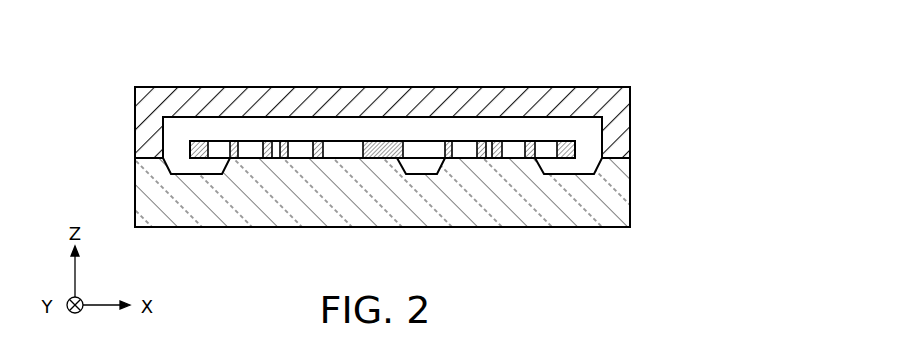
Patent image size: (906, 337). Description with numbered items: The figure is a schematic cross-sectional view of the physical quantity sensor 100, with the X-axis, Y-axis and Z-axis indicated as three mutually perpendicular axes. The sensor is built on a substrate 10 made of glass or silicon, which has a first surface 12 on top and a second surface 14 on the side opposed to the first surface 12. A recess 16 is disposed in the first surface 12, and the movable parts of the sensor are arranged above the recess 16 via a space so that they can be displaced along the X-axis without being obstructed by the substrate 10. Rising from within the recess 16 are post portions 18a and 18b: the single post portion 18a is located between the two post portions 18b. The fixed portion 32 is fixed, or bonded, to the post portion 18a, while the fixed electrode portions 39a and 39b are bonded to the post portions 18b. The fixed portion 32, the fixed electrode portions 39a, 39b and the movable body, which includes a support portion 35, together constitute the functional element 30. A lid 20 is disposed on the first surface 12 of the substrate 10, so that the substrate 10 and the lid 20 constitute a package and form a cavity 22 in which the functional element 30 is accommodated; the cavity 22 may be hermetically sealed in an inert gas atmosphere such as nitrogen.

The physical quantity sensor 100 is at (651, 68).
The substrate 10 is at (597, 207).
The first surface 12 is at (607, 150).
The second surface 14 is at (615, 233).
The recess 16 is at (580, 154).
The post portion 18a is at (384, 165).
The post portion 18b is at (280, 165).
The lid 20 is at (612, 115).
The cavity 22 is at (350, 130).
The functional element 30 is at (182, 138).
The fixed portion 32 is at (380, 140).
The support portion 35 is at (563, 140).
The fixed electrode portion 39a is at (234, 140).
The fixed electrode portion 39b is at (267, 140).